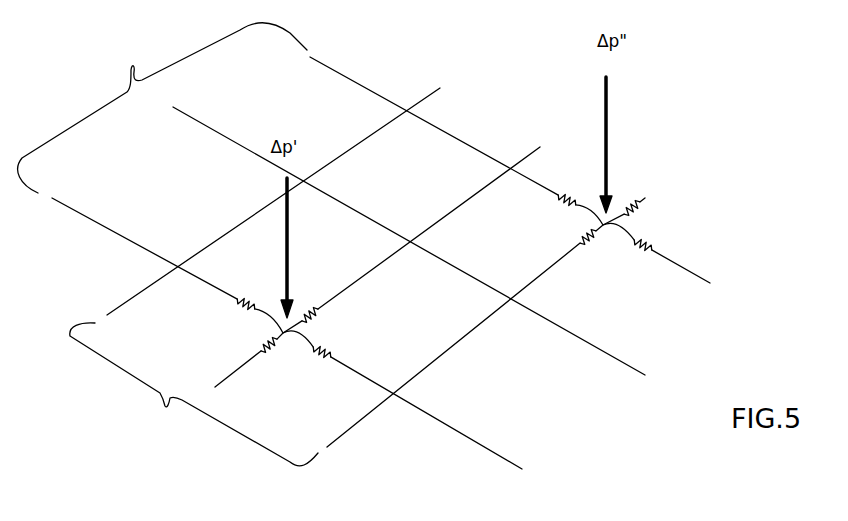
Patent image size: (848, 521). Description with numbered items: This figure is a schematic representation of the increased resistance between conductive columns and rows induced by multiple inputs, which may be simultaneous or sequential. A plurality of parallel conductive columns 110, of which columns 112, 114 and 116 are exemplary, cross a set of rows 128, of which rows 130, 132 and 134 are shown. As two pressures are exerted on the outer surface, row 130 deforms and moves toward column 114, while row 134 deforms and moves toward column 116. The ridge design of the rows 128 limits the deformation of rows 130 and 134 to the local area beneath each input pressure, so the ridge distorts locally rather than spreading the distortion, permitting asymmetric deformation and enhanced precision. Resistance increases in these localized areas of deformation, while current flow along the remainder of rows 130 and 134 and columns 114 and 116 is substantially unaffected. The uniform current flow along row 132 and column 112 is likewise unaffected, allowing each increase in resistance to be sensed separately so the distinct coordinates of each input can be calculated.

The conductive columns 110 is at (194, 394).
The rows 128 is at (162, 108).
The column 112 is at (433, 92).
The column 114 is at (540, 147).
The column 116 is at (643, 198).
The row 130 is at (503, 457).
The row 132 is at (618, 357).
The row 134 is at (683, 265).